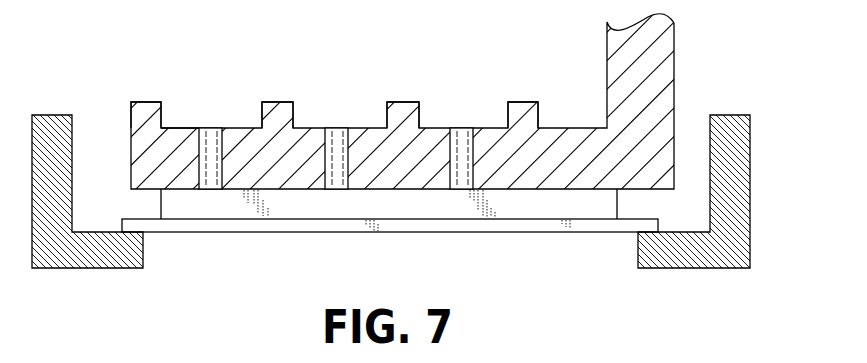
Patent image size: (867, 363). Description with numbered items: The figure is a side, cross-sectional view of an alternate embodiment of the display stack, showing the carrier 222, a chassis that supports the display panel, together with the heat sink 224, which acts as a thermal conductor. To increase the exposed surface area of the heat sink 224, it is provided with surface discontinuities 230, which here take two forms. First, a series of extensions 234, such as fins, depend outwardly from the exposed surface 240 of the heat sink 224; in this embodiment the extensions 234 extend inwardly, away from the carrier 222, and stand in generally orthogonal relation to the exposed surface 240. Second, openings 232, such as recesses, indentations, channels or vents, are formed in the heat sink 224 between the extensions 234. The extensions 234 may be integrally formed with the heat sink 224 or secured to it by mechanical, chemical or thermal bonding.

The carrier 222 is at (107, 272).
The heat sink 224 is at (318, 122).
The surface discontinuities 230 is at (408, 112).
The openings 232 is at (212, 184).
The extensions 234 is at (143, 105).
The exposed surface 240 is at (183, 128).